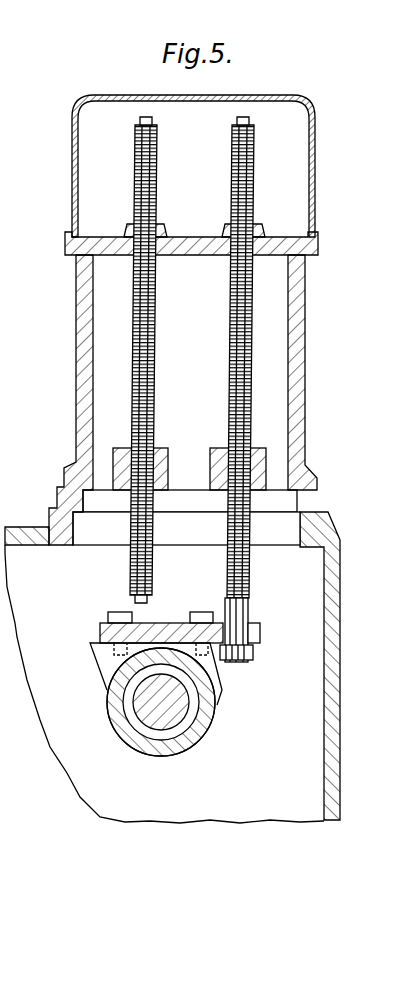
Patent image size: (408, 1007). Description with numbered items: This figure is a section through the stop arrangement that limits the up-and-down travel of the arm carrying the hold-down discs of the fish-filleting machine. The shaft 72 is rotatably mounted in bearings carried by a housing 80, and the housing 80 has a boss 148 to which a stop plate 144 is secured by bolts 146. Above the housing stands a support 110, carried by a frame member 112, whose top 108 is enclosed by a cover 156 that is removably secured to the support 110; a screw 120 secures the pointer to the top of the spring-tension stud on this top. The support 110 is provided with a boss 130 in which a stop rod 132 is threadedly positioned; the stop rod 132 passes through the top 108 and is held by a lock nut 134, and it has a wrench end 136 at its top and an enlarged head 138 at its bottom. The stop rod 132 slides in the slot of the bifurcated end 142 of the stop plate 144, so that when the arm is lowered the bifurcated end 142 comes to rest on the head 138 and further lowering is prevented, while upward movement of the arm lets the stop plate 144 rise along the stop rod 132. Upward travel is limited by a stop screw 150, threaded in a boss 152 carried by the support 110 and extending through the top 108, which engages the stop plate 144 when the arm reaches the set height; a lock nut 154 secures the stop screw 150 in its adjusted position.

The shaft 72 is at (188, 711).
The housing 80 is at (171, 752).
The top 108 is at (268, 247).
The support 110 is at (303, 378).
The frame member 112 is at (5, 314).
The screw 120 is at (170, 656).
The boss 130 is at (258, 450).
The stop rod 132 is at (249, 383).
The lock nut 134 is at (259, 223).
The wrench end 136 is at (250, 121).
The enlarged head 138 is at (254, 655).
The bifurcated end 142 is at (261, 633).
The stop plate 144 is at (164, 631).
The bolts 146 is at (113, 612).
The boss 148 is at (103, 671).
The stop screw 150 is at (150, 347).
The boss 152 is at (164, 450).
The lock nut 154 is at (160, 226).
The cover 156 is at (316, 180).